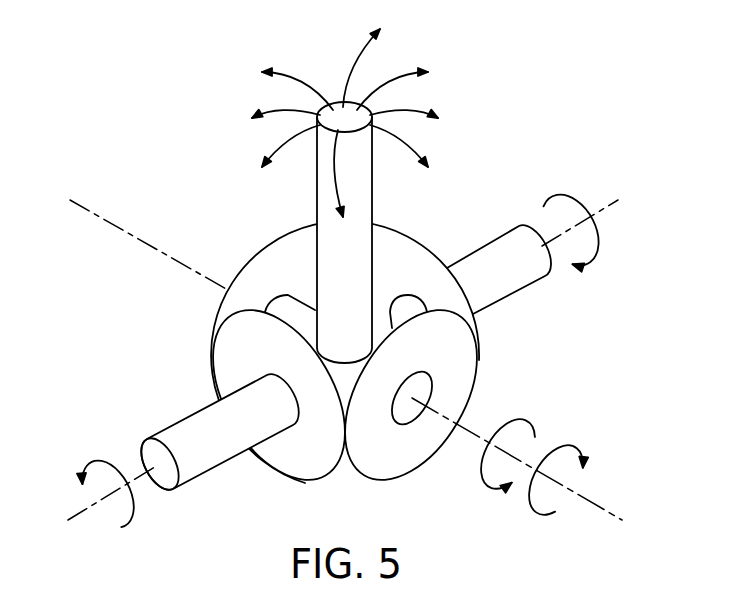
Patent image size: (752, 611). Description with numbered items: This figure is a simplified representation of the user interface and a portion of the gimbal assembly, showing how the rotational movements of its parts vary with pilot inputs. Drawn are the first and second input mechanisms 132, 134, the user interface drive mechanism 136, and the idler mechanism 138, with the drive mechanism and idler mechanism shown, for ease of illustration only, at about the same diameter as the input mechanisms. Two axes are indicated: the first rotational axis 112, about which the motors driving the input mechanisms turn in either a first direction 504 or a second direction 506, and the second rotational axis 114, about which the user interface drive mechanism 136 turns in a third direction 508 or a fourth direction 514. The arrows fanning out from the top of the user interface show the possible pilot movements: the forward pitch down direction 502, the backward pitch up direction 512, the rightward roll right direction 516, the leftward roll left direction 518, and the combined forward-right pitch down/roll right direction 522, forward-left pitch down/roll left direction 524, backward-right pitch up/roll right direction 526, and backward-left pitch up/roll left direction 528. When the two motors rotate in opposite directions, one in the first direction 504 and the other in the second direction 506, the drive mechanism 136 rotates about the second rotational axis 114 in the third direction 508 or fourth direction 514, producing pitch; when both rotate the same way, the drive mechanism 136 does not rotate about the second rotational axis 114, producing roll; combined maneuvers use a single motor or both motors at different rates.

The first rotational axis 112 is at (73, 517).
The second rotational axis 114 is at (90, 212).
The first input mechanism 132 is at (287, 478).
The second input mechanism 134 is at (414, 253).
The user interface drive mechanism 136 is at (473, 368).
The idler mechanism 138 is at (267, 259).
The pitch down direction 502 is at (393, 75).
The first direction 504 is at (129, 518).
The second direction 506 is at (598, 246).
The third direction 508 is at (581, 452).
The pitch up direction 512 is at (278, 148).
The fourth direction 514 is at (537, 434).
The roll right direction 516 is at (412, 148).
The roll left direction 518 is at (293, 76).
The pitch down/roll right direction 522 is at (410, 109).
The pitch down/roll left direction 524 is at (365, 51).
The pitch up/roll right direction 526 is at (333, 180).
The pitch up/roll left direction 528 is at (277, 109).